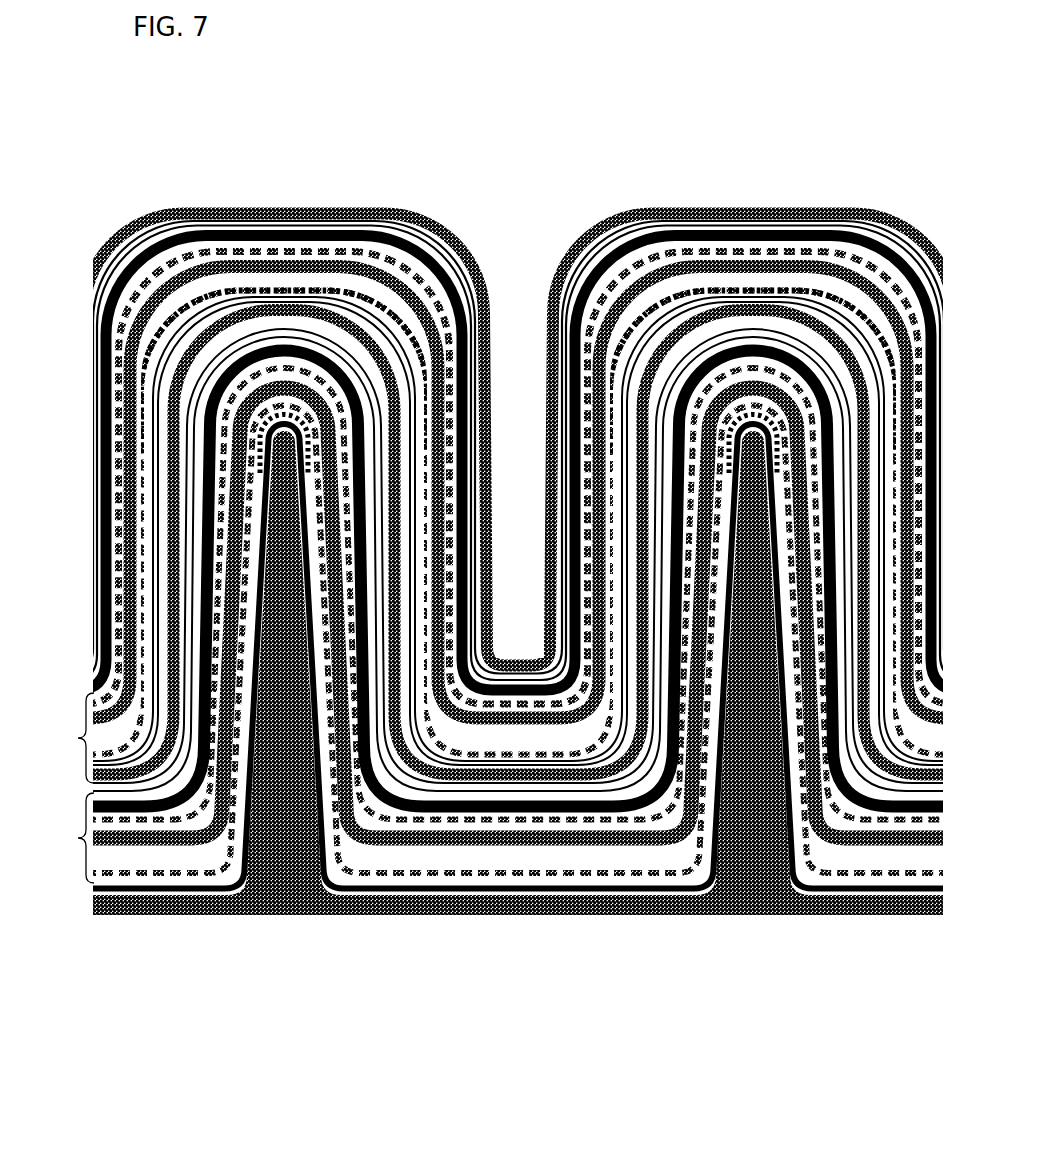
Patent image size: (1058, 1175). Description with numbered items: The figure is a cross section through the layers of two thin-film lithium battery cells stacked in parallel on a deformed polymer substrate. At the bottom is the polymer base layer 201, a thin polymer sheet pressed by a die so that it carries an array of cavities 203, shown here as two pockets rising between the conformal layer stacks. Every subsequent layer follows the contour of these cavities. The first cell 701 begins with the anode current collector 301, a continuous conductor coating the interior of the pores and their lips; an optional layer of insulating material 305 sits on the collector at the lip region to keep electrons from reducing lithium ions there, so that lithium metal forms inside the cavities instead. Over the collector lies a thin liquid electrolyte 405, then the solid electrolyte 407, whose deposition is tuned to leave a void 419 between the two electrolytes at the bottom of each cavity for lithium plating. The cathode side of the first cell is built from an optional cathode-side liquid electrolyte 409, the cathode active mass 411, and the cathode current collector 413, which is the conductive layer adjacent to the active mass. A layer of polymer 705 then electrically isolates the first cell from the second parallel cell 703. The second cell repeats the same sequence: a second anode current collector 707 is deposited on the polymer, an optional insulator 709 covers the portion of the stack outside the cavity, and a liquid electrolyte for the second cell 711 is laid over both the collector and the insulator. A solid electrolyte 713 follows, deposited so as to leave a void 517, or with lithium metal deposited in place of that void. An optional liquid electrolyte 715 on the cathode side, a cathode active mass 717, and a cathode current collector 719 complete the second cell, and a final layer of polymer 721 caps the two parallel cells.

The polymer base layer 201 is at (518, 673).
The cavities 203 is at (520, 448).
The anode current collector 301 is at (518, 656).
The insulating material 305 is at (518, 444).
The liquid electrolyte 405 is at (518, 613).
The solid electrolyte 407 is at (518, 593).
The cathode-side liquid electrolyte 409 is at (518, 579).
The cathode active mass 411 is at (518, 560).
The cathode current collector 413 is at (518, 542).
The void 419 is at (518, 639).
The void 517 is at (518, 509).
The first cell 701 is at (58, 838).
The second parallel cell 703 is at (58, 738).
The layer of polymer 705 is at (518, 531).
The second anode current collector 707 is at (518, 523).
The insulator 709 is at (518, 372).
The liquid electrolyte for the second cell 711 is at (518, 493).
The solid electrolyte 713 is at (518, 478).
The liquid electrolyte 715 is at (518, 463).
The cathode active mass 717 is at (518, 470).
The cathode current collector 719 is at (518, 440).
The layer of polymer 721 is at (518, 450).